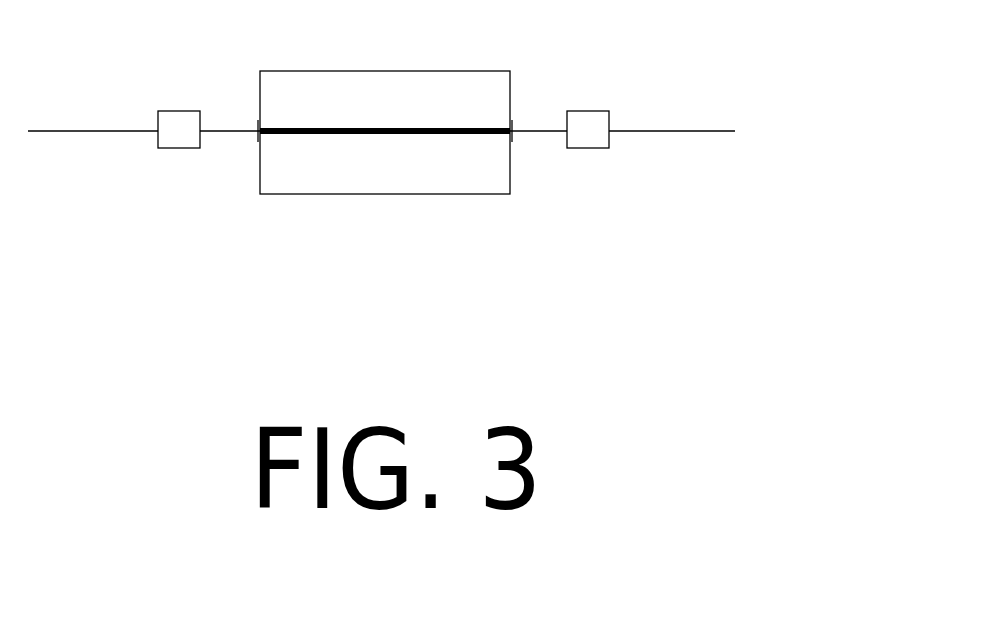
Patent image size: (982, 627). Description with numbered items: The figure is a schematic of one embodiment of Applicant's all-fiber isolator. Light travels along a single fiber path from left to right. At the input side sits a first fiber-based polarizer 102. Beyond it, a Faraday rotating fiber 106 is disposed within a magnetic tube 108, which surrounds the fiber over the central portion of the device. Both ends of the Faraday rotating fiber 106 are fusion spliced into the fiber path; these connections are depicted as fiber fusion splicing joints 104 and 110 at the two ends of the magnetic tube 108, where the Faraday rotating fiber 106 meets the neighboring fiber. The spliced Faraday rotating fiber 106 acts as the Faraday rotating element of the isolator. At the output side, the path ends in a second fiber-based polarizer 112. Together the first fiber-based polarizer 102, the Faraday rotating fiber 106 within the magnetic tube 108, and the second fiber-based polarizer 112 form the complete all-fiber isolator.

The first fiber-based polarizer 102 is at (185, 123).
The fiber fusion splicing joint 104 is at (258, 132).
The Faraday rotating fiber 106 is at (332, 135).
The magnetic tube 108 is at (512, 78).
The fiber fusion splicing joint 110 is at (512, 133).
The second fiber-based polarizer 112 is at (603, 122).